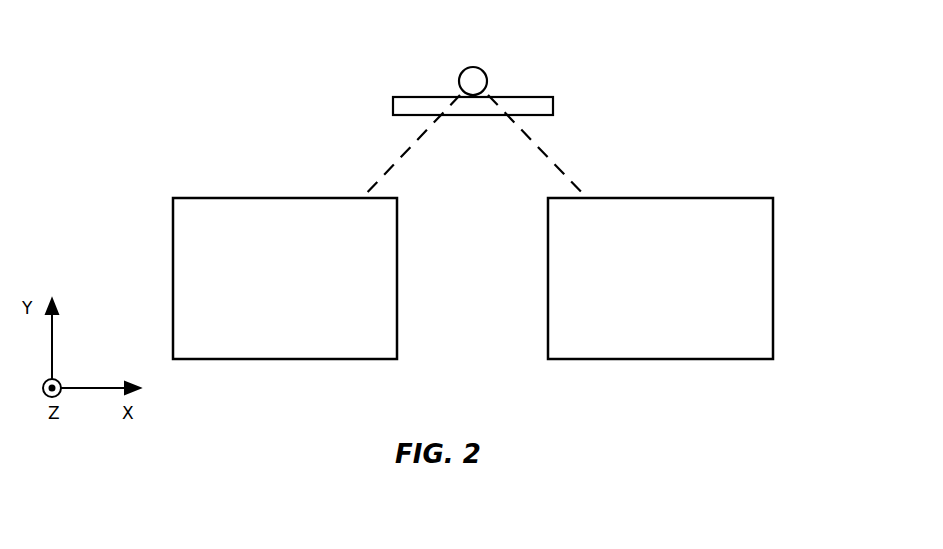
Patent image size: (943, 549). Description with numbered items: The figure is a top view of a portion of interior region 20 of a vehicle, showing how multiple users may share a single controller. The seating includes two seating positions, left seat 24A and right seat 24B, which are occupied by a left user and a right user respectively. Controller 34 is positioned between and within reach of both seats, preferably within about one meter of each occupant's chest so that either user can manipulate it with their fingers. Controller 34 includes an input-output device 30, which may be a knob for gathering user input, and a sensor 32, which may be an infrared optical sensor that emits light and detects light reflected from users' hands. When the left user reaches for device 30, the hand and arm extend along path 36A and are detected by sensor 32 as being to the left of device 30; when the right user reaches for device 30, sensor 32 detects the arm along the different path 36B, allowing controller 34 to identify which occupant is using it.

The interior region 20 is at (675, 82).
The left seat 24A is at (183, 277).
The right seat 24B is at (765, 278).
The device 30 is at (469, 76).
The sensor 32 is at (538, 105).
The controller 34 is at (447, 52).
The path 36A is at (404, 152).
The path 36B is at (547, 152).